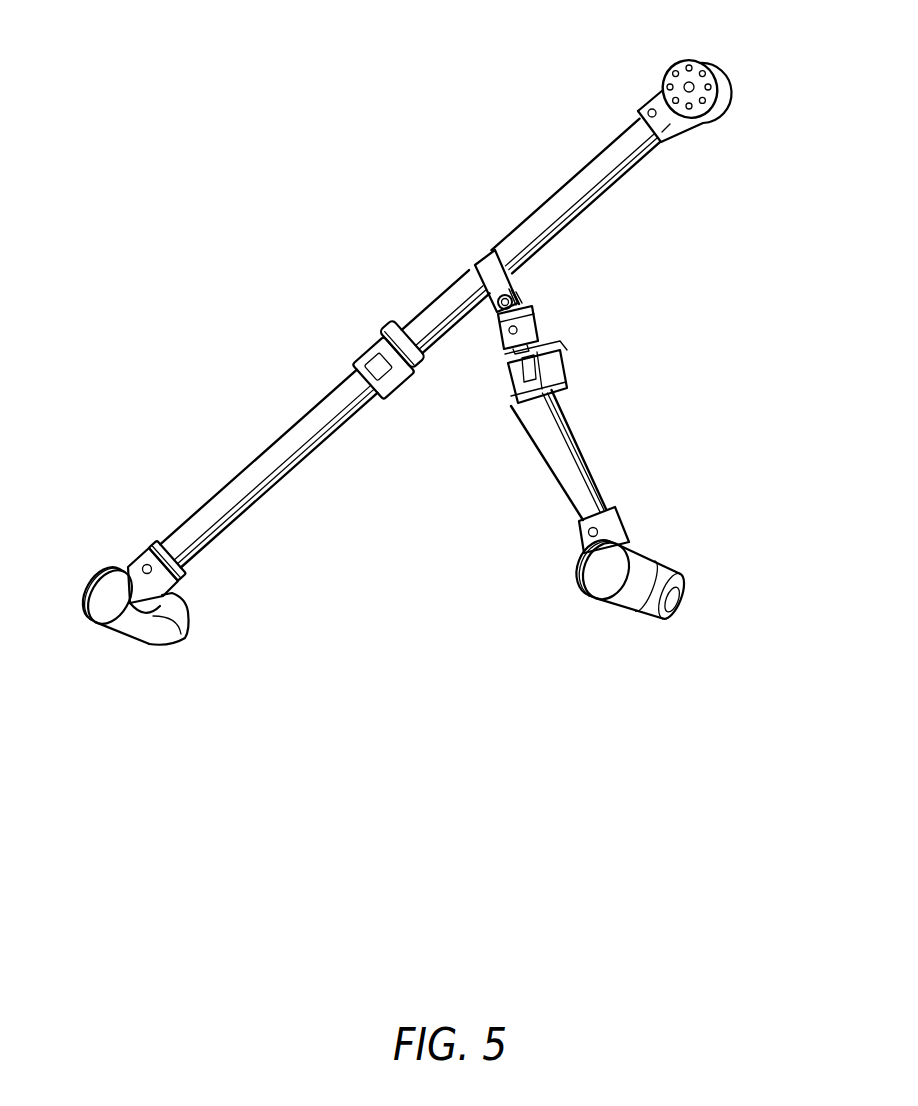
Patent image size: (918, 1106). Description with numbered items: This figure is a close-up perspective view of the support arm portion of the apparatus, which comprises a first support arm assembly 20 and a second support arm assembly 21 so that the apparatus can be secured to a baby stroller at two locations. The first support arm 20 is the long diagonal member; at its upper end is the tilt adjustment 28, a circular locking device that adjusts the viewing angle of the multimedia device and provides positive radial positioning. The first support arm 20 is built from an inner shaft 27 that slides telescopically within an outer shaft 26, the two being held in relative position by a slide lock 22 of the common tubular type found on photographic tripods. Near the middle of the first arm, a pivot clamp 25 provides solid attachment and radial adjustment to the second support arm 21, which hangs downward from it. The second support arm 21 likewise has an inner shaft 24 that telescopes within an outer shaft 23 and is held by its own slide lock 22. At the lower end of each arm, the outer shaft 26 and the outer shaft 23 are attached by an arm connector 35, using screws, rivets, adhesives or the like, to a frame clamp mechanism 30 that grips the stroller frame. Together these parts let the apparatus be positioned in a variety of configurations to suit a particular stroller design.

The first support arm assembly 20 is at (118, 192).
The second support arm assembly 21 is at (745, 385).
The slide lock 22 is at (373, 357).
The outer shaft 23 is at (562, 438).
The inner shaft 24 is at (536, 344).
The pivot clamp 25 is at (518, 291).
The outer shaft 26 is at (277, 452).
The inner shaft 27 is at (453, 300).
The tilt adjustment 28 is at (675, 72).
The frame clamp mechanism 30 is at (104, 570).
The arm connector 35 is at (147, 543).